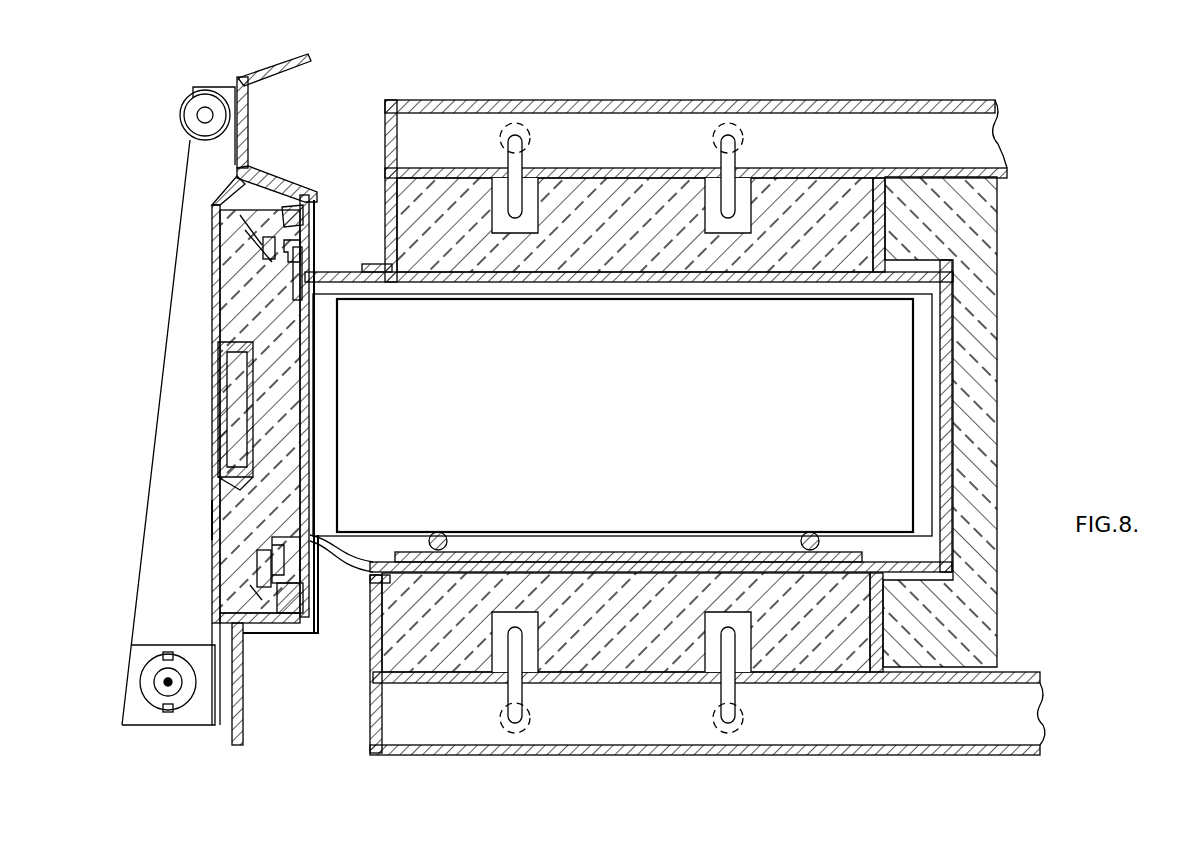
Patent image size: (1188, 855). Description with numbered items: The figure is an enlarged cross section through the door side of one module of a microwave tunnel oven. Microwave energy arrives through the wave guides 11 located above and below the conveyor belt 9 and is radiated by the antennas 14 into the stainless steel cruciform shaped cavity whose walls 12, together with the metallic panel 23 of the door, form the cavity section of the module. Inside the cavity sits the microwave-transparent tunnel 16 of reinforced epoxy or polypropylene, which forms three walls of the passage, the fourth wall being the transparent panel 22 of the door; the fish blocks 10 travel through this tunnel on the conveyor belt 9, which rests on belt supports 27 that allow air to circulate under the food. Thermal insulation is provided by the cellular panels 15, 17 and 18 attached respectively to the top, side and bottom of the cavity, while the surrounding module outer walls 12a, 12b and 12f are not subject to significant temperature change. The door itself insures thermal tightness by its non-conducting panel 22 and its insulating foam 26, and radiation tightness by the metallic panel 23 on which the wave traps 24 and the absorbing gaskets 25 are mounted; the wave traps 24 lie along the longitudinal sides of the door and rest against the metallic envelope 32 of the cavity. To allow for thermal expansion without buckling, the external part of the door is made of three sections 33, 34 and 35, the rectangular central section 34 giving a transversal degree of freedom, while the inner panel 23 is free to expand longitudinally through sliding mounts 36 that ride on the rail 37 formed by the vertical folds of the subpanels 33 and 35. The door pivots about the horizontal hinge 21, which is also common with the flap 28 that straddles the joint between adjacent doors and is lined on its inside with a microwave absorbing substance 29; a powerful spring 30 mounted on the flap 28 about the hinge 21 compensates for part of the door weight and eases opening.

The conveyor belt 9 is at (520, 552).
The fish block 10 is at (646, 393).
The wave guide 11 is at (782, 100).
The cruciform shaped cavity wall 12 is at (622, 172).
The module outer wall 12a is at (250, 160).
The module outer wall 12b is at (300, 80).
The module outer wall 12f is at (318, 640).
The antenna 14 is at (528, 162).
The thermal insulation panel 15 is at (448, 195).
The tunnel 16 is at (480, 298).
The thermal insulation panel 17 is at (990, 212).
The thermal insulation panel 18 is at (450, 655).
The hinge 21 is at (160, 700).
The non-conducting surface panel 22 is at (315, 447).
The metallic panel 23 is at (308, 415).
The wave trap 24 is at (302, 262).
The absorbing gasket 25 is at (300, 215).
The insulation material 26 is at (237, 237).
The belt support 27 is at (440, 532).
The flap 28 is at (170, 335).
The microwave absorbing substance 29 is at (218, 388).
The spring 30 is at (188, 710).
The metallic envelope 32 is at (345, 306).
The external door section 33 is at (215, 285).
The central door section 34 is at (218, 432).
The external door section 35 is at (213, 522).
The sliding mount 36 is at (268, 248).
The rail 37 is at (258, 215).